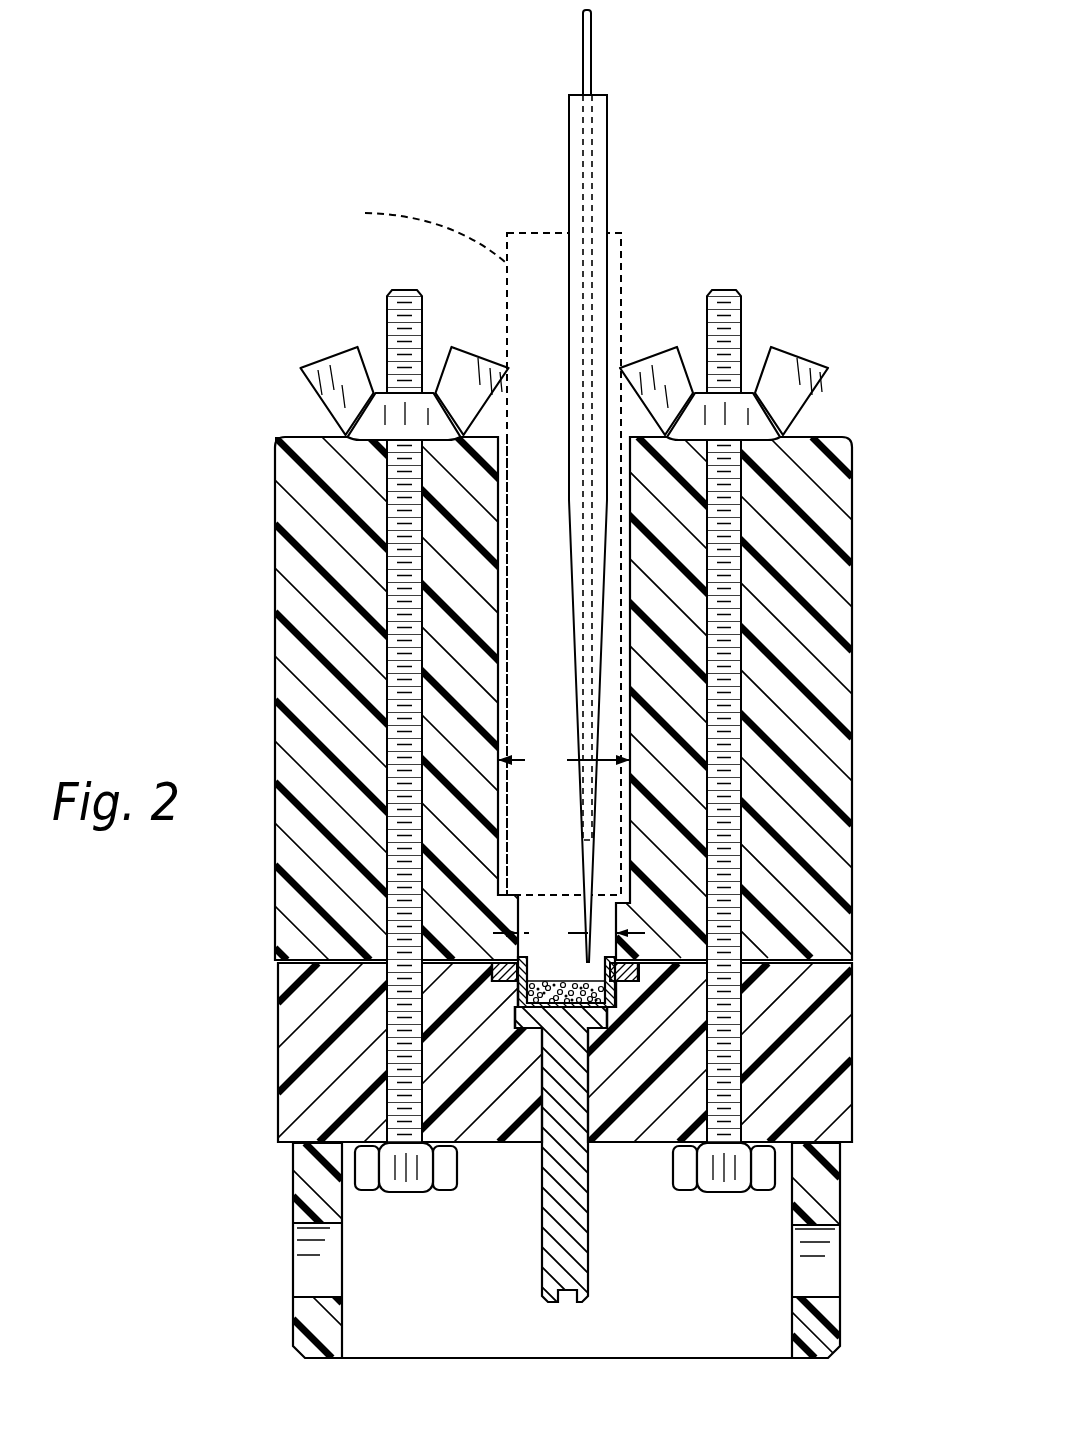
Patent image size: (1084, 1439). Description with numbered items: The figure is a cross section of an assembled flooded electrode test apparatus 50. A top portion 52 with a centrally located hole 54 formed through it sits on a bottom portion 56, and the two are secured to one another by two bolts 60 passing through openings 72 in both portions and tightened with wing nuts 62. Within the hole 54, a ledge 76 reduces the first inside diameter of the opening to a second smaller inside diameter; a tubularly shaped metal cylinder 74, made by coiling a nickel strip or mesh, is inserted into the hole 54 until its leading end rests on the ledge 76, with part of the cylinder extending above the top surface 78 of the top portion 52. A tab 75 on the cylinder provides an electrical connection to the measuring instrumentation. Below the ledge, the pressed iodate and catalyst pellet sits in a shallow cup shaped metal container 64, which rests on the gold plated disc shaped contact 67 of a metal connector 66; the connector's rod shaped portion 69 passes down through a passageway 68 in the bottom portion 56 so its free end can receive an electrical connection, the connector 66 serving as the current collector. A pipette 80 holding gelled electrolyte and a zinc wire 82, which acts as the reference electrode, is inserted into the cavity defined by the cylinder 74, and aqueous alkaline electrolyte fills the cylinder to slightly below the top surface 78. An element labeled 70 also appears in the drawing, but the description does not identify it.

The test apparatus 50 is at (206, 222).
The top portion 52 is at (268, 592).
The hole 54 is at (508, 482).
The bottom portion 56 is at (266, 1113).
The bolts 60 is at (392, 322).
The wing nuts 62 is at (337, 362).
The cup shaped metal container 64 is at (613, 968).
The metal connector 66 is at (618, 1240).
The disc shaped contact 67 is at (530, 1020).
The passageway 68 is at (590, 1067).
The rod shaped portion 69 is at (543, 1205).
The nut 70 is at (292, 1146).
The openings 72 is at (387, 638).
The tubularly shaped metal cylinder 74 is at (622, 306).
The tab 75 is at (412, 214).
The ledge 76 is at (618, 900).
The top surface 78 is at (305, 434).
The pipette 80 is at (607, 133).
The zinc wire 82 is at (592, 36).